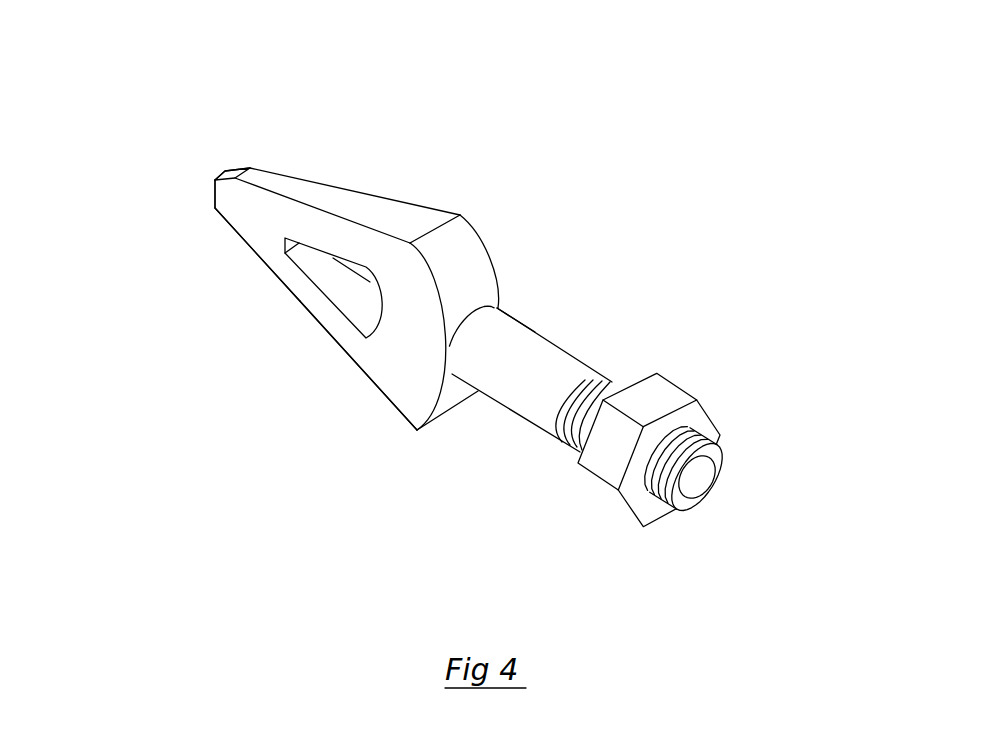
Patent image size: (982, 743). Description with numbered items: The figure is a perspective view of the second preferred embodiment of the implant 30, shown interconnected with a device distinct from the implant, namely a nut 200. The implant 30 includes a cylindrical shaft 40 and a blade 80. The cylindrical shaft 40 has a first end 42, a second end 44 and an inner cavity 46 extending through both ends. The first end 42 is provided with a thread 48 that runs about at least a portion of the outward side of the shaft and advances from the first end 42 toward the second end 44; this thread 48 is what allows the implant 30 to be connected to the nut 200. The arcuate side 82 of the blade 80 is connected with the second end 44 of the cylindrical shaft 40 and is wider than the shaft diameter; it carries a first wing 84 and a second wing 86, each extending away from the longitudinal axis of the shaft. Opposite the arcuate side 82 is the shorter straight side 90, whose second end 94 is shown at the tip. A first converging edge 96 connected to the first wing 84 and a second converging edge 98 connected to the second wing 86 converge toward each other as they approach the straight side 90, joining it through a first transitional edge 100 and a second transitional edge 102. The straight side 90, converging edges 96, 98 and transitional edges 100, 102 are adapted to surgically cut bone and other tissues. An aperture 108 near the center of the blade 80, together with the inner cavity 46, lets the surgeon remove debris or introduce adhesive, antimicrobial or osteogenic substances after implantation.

The implant 30 is at (461, 308).
The blade 80 is at (295, 225).
The second converging edge 98 is at (355, 139).
The second wing 86 is at (449, 174).
The arcuate side 82 is at (541, 210).
The first wing 84 is at (496, 399).
The straight side 90 is at (153, 168).
The second transitional edge 102 is at (175, 131).
The second end of straight side 94 is at (132, 205).
The first transitional edge 100 is at (174, 254).
The first converging edge 96 is at (350, 412).
The aperture 108 is at (269, 311).
The cylindrical shaft 40 is at (569, 342).
The second end 44 is at (547, 262).
The thread 48 is at (645, 370).
The nut 200 is at (713, 431).
The first end 42 is at (760, 462).
The inner cavity 46 is at (774, 525).